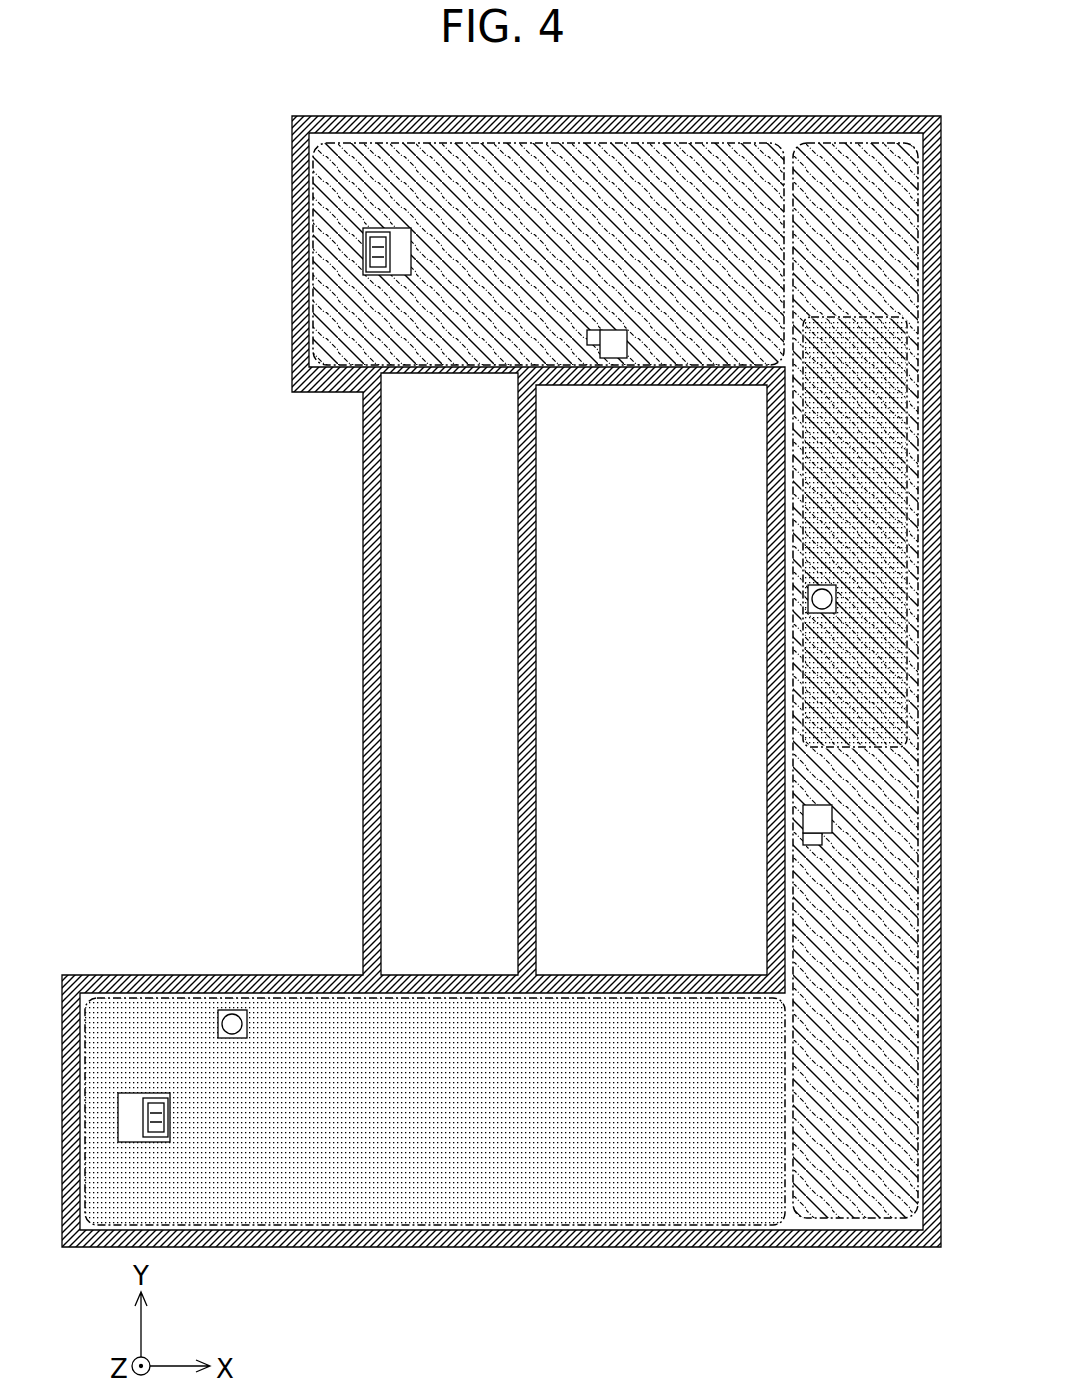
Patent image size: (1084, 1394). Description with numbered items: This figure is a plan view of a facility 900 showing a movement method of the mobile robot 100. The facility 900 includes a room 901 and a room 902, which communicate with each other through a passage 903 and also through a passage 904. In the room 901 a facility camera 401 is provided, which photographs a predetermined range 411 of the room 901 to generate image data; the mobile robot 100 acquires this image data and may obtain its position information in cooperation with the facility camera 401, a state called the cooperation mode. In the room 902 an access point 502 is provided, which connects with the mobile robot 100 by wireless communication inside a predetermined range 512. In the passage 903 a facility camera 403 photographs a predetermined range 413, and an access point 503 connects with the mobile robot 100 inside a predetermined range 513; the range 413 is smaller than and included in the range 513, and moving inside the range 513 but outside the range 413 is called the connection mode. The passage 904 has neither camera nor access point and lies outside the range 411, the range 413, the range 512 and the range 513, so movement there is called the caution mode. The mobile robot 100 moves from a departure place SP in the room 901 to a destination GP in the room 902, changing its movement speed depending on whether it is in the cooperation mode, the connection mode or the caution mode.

The facility 900 is at (147, 200).
The room 901 is at (158, 953).
The room 902 is at (258, 340).
The passage 903 is at (730, 698).
The passage 904 is at (343, 698).
The mobile robot 100 is at (127, 1122).
The destination GP is at (369, 299).
The departure place SP is at (141, 1052).
The facility camera 401 is at (233, 1010).
The facility camera 403 is at (808, 597).
The range 411 is at (297, 1045).
The range 413 is at (823, 545).
The access point 502 is at (609, 360).
The access point 503 is at (815, 821).
The range 512 is at (674, 340).
The range 513 is at (812, 773).